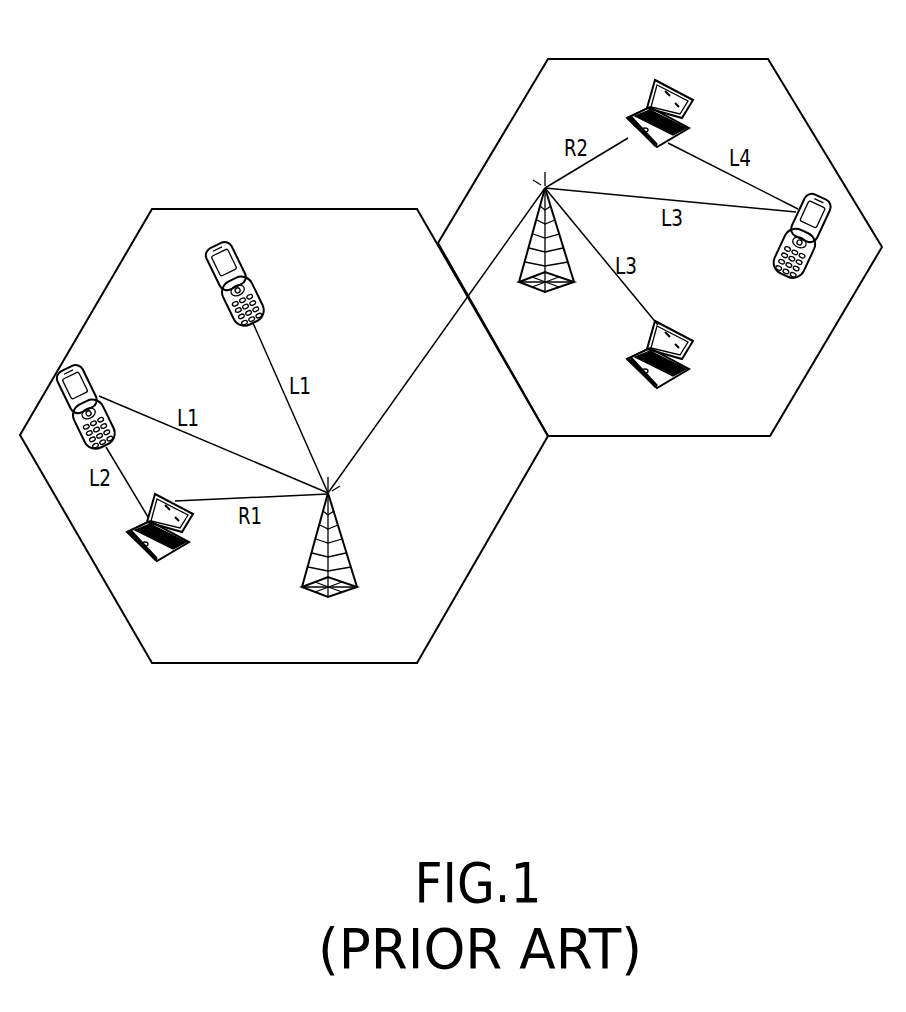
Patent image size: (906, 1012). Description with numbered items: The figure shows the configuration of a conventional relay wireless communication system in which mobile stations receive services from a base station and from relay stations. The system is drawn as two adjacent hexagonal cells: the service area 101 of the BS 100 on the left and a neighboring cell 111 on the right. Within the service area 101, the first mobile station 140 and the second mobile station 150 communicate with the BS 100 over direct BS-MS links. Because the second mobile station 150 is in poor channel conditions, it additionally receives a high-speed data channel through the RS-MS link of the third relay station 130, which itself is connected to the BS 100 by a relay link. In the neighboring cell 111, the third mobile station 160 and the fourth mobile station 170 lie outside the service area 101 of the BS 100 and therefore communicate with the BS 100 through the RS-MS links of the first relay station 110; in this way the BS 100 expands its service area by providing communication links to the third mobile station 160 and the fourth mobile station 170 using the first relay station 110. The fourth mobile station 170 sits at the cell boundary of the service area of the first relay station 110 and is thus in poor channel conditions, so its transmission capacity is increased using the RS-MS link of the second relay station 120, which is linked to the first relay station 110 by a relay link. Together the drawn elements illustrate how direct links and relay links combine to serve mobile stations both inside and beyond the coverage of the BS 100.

The service area 101 is at (288, 208).
The second cell 111 is at (659, 59).
The BS 100 is at (329, 567).
The RS1 110 is at (546, 260).
The RS2 120 is at (639, 106).
The RS3 130 is at (160, 556).
The MS1 140 is at (257, 283).
The MS2 150 is at (99, 396).
The MS3 160 is at (679, 373).
The MS4 170 is at (798, 260).